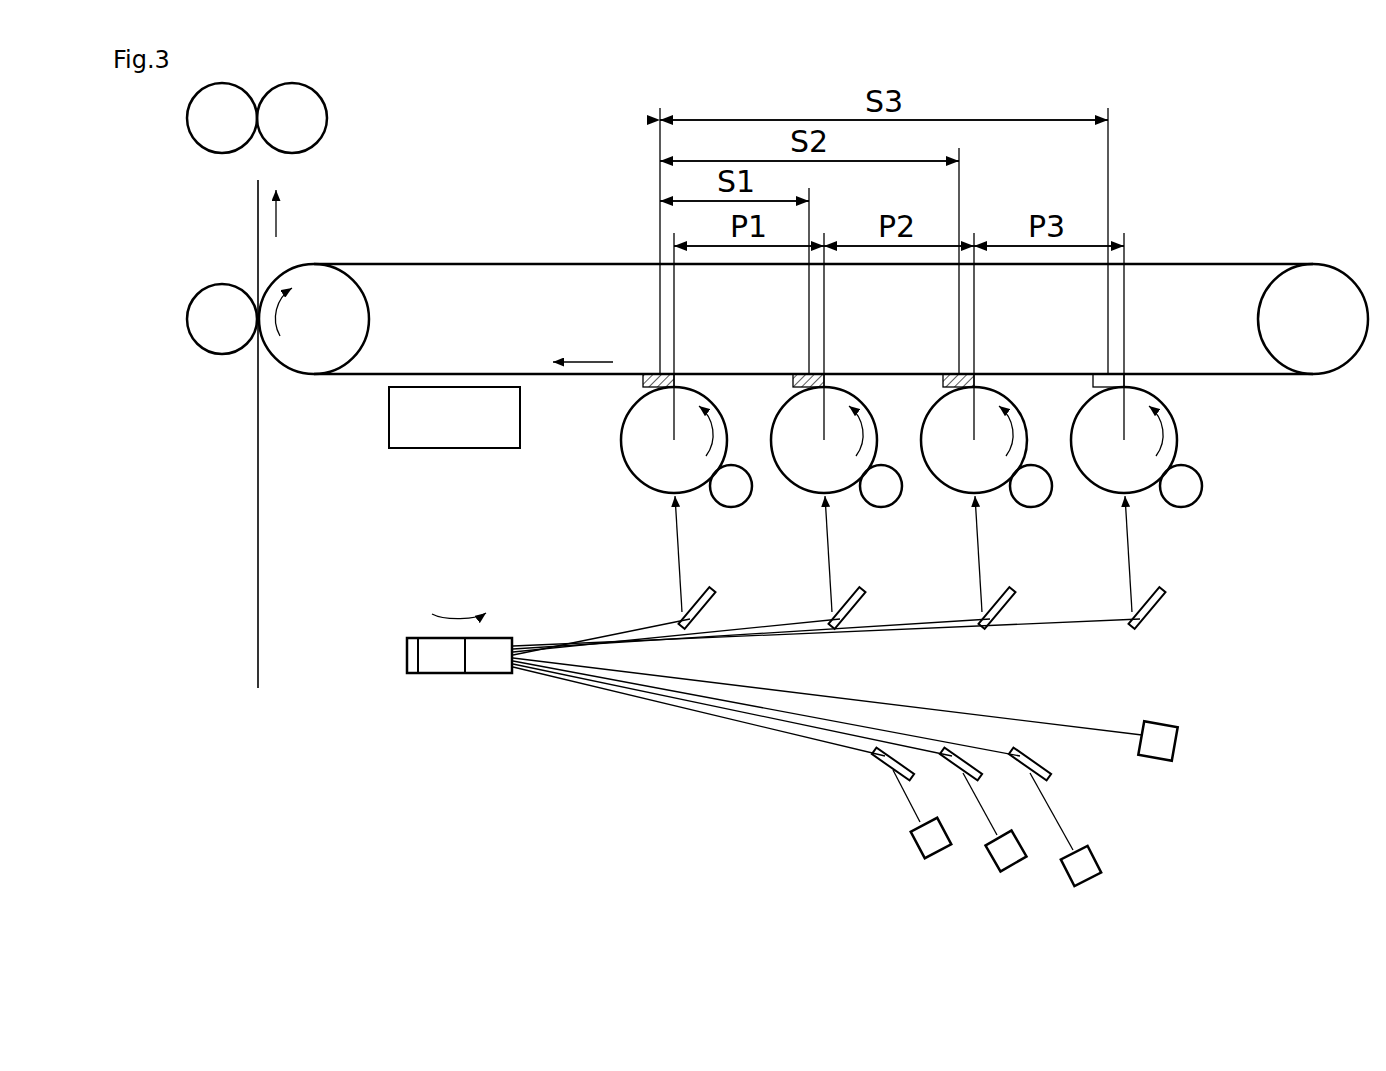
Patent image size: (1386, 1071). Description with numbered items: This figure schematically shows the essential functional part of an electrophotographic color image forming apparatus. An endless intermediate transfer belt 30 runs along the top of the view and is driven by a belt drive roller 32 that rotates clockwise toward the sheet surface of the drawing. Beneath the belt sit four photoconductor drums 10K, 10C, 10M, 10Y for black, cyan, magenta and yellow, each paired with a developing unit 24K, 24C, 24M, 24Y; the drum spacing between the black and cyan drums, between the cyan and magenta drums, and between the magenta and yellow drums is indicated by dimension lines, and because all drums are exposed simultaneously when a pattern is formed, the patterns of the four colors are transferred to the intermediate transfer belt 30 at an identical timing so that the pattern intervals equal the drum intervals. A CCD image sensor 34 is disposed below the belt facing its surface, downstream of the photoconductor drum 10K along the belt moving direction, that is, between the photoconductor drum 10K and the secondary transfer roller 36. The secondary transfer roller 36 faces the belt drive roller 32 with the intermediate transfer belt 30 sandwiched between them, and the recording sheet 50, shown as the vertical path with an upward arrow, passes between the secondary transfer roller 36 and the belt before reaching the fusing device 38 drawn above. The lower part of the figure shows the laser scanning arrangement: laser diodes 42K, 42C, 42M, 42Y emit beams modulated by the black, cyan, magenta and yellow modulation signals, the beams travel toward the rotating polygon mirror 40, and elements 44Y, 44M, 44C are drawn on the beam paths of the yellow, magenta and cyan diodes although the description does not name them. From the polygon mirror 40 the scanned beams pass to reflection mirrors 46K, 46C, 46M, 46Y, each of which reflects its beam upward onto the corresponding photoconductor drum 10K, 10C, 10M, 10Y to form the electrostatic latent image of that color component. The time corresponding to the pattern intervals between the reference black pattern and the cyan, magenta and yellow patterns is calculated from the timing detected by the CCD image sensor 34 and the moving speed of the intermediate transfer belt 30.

The photoconductor drum 10K is at (630, 474).
The photoconductor drum 10C is at (780, 474).
The photoconductor drum 10M is at (930, 474).
The photoconductor drum 10Y is at (1180, 448).
The developing unit 24K is at (733, 507).
The developing unit 24C is at (883, 507).
The developing unit 24M is at (1033, 507).
The developing unit 24Y is at (1183, 507).
The intermediate transfer belt 30 is at (488, 262).
The belt drive roller 32 is at (350, 267).
The CCD image sensor 34 is at (440, 448).
The secondary transfer roller 36 is at (215, 287).
The fusing device 38 is at (327, 108).
The polygon mirror 40 is at (407, 650).
The laser diode 42K is at (1178, 740).
The laser diode 42C is at (1070, 880).
The laser diode 42M is at (997, 865).
The laser diode 42Y is at (920, 850).
The reflecting mirror (cyan) 44C is at (1035, 757).
The reflecting mirror (magenta) 44M is at (968, 755).
The reflecting mirror (yellow) 44Y is at (895, 750).
The reflection mirror 46K is at (717, 587).
The reflection mirror 46C is at (867, 587).
The reflection mirror 46M is at (1017, 587).
The reflection mirror 46Y is at (1167, 587).
The recording sheet 50 is at (258, 572).